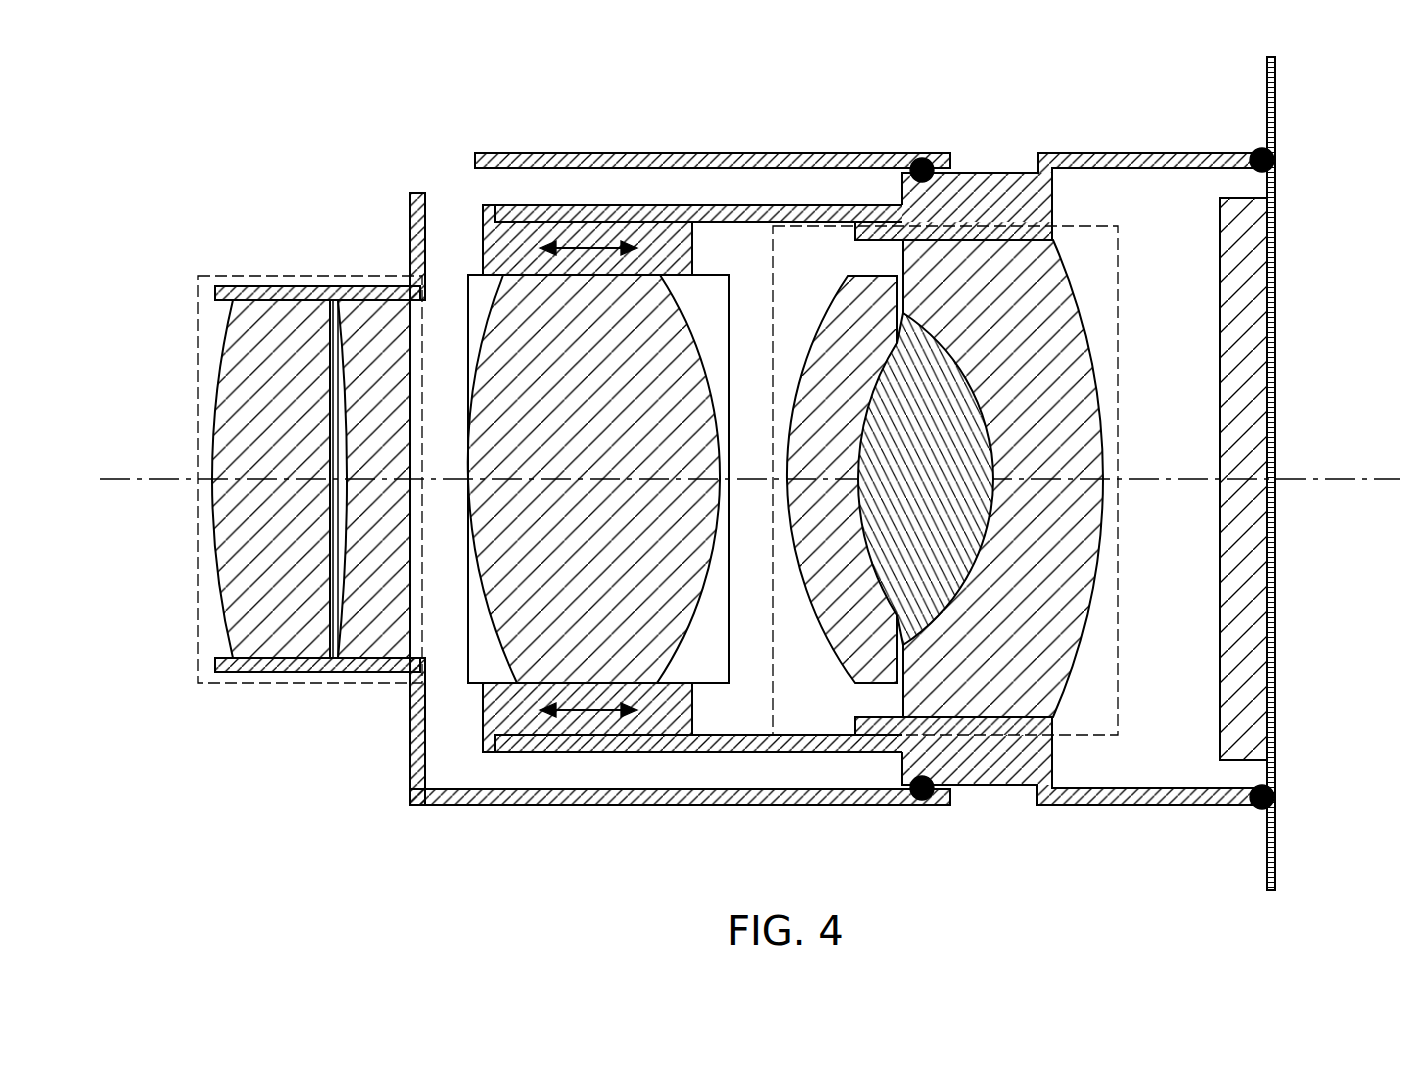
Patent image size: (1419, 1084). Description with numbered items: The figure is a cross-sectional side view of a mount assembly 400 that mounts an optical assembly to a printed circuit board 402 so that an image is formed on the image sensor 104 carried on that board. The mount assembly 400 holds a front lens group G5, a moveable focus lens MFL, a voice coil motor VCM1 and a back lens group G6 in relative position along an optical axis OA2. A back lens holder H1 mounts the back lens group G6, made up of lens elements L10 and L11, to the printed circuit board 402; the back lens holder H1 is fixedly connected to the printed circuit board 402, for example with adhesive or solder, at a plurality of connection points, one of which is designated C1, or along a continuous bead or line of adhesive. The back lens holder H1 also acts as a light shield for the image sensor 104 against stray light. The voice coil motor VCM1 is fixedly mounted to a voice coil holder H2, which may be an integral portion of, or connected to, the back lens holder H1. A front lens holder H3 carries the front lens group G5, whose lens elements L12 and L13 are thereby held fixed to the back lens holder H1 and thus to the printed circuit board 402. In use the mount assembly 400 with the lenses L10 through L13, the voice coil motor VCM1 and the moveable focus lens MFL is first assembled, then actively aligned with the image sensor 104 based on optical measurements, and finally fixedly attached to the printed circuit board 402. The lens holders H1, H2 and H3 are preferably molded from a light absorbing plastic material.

The mount assembly 400 is at (172, 117).
The printed circuit board 402 is at (1276, 222).
The image sensor 104 is at (1255, 357).
The optical axis OA2 is at (127, 479).
The front lens group G5 is at (310, 479).
The back lens group G6 is at (980, 542).
The lens element L10 is at (853, 655).
The lens element L11 is at (1085, 545).
The lens element L12 is at (288, 325).
The lens element L13 is at (388, 325).
The back lens holder H1 is at (985, 173).
The voice coil holder H2 is at (565, 205).
The front lens holder H3 is at (337, 305).
The voice coil motor VCM1 is at (650, 248).
The moveable focus lens MFL is at (597, 640).
The connection point C1 is at (1256, 806).